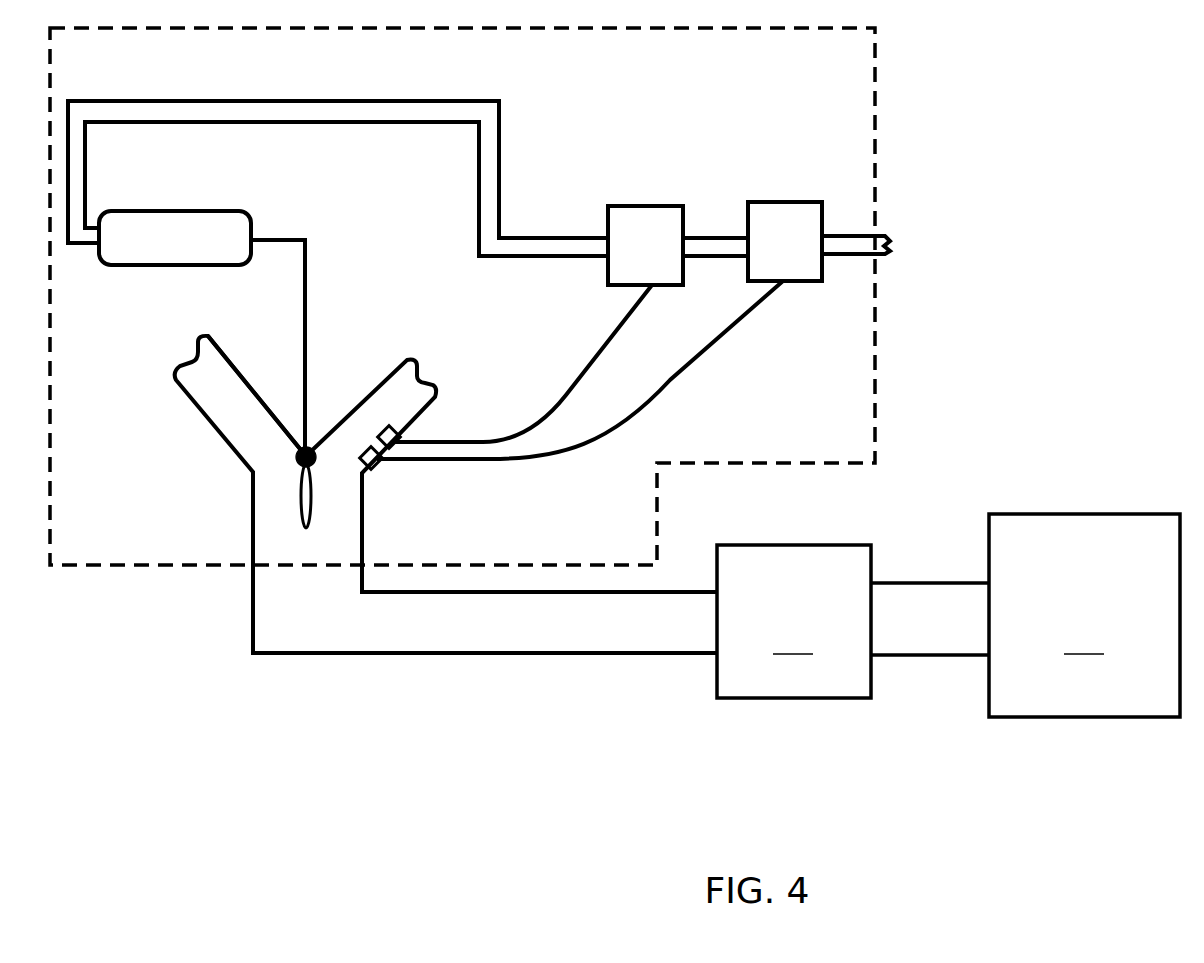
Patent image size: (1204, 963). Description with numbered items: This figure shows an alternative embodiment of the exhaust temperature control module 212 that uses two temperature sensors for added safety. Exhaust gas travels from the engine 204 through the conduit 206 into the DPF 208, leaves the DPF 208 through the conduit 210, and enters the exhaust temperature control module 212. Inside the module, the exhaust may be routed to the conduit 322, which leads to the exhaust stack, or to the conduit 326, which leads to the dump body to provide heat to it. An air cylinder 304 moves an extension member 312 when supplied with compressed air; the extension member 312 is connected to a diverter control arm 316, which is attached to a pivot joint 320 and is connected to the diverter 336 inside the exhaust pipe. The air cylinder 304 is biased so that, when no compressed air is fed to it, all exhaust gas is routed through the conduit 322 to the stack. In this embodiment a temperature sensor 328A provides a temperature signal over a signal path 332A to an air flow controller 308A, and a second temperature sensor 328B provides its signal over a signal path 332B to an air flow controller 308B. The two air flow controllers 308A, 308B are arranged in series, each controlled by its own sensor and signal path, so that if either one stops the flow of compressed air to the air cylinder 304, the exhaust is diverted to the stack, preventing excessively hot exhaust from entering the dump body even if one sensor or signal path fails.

The engine 204 is at (1084, 615).
The conduit 206 is at (920, 583).
The DPF 208 is at (794, 621).
The conduit 210 is at (668, 655).
The exhaust temperature control module 212 is at (876, 152).
The air cylinder 304 is at (180, 210).
The air flow controller 308A is at (668, 206).
The air flow controller 308B is at (800, 202).
The extension member 312 is at (275, 238).
The diverter control arm 316 is at (302, 362).
The pivot joint 320 is at (310, 450).
The conduit 322 is at (205, 393).
The conduit 326 is at (390, 395).
The temperature sensor 328A is at (392, 432).
The temperature sensor 328B is at (368, 470).
The signal path 332A is at (578, 382).
The signal path 332B is at (723, 342).
The diverter 336 is at (302, 503).